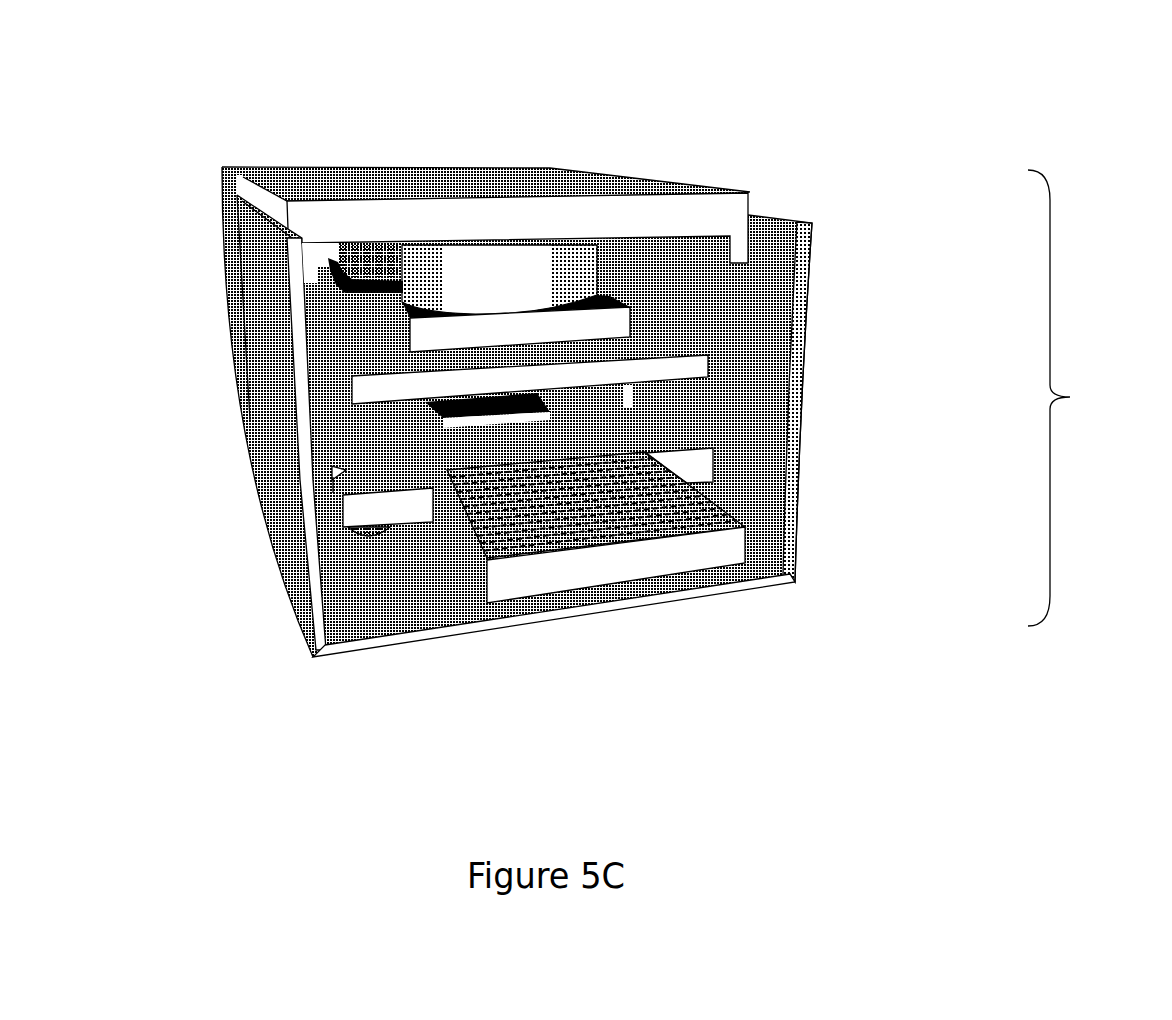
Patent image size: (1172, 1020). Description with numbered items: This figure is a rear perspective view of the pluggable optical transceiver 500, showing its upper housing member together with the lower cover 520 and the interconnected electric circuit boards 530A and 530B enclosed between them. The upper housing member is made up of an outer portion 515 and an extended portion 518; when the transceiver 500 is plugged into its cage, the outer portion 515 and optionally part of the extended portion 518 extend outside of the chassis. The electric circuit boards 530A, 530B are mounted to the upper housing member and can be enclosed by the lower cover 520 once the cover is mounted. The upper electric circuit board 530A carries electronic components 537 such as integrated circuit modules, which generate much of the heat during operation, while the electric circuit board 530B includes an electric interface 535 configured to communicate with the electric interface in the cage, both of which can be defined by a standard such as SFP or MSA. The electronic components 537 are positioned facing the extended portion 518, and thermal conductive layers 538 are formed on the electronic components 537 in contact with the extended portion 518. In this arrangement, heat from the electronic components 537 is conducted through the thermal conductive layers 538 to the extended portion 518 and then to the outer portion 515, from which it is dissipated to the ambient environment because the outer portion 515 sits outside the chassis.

The pluggable optical transceiver 500 is at (1079, 398).
The outer portion 515 is at (228, 255).
The extended portion 518 is at (567, 187).
The lower cover 520 is at (290, 448).
The upper electric circuit board 530A is at (700, 358).
The electric circuit board 530B is at (663, 442).
The electric interface 535 is at (693, 515).
The electronic components 537 is at (607, 325).
The thermal conductive layers 538 is at (487, 268).